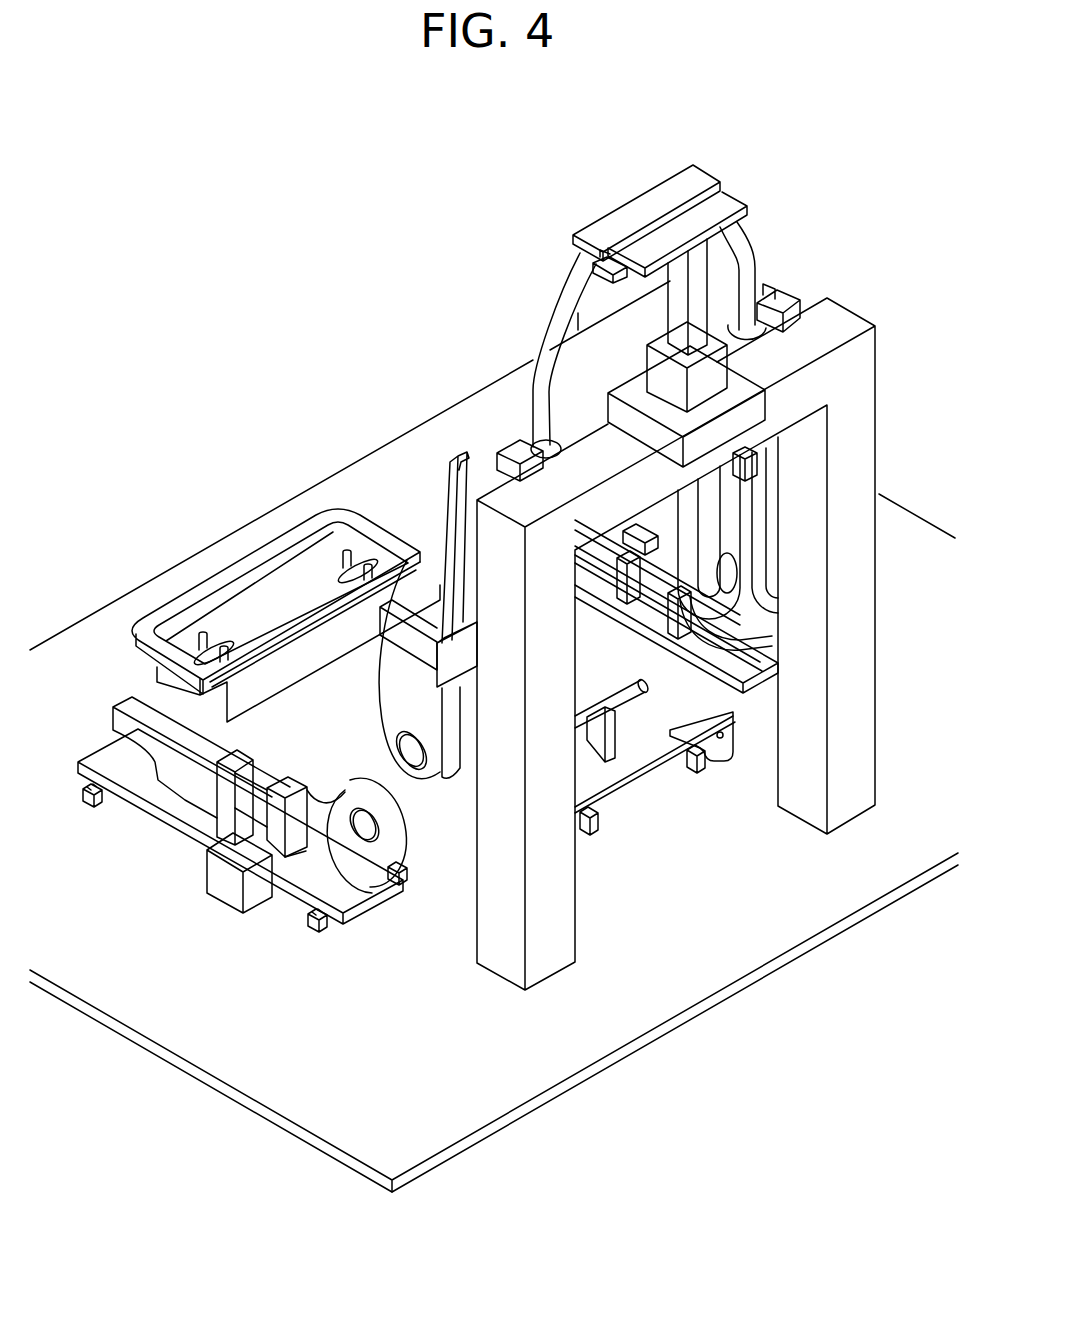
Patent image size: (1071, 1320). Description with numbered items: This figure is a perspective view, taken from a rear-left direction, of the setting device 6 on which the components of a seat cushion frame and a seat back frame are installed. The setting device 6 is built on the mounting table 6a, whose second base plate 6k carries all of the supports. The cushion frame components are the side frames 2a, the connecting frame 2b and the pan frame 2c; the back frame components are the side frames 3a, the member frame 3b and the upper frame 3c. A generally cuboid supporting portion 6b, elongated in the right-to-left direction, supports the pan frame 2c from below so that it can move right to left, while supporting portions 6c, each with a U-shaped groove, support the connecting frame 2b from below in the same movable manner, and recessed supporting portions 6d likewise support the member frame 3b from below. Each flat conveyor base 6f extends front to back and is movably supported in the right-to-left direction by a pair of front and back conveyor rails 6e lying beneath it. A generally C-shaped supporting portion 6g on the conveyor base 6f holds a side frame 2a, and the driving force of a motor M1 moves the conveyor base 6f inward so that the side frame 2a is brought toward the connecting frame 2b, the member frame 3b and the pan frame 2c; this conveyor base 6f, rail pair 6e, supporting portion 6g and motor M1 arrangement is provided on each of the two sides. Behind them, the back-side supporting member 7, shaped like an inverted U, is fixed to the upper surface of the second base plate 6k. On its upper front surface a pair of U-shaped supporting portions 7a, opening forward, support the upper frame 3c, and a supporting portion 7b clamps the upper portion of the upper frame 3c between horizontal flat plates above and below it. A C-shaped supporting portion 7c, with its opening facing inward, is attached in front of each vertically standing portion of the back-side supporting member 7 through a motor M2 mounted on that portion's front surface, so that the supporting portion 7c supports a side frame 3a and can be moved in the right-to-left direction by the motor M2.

The setting device 6 is at (134, 129).
The mounting table 6a is at (494, 736).
The second base plate 6k is at (470, 1090).
The supporting portion 6b is at (286, 620).
The supporting portion 6c is at (614, 742).
The supporting portion 6d is at (706, 766).
The conveyor rail 6e is at (112, 800).
The conveyor base 6f is at (381, 902).
The supporting portion 6g is at (223, 797).
The back-side supporting member 7 is at (866, 657).
The supporting portion 7a is at (553, 442).
The supporting portion 7b is at (727, 207).
The supporting portion 7c is at (455, 690).
The side frame 2a is at (386, 852).
The connecting frame 2b is at (628, 698).
The pan frame 2c is at (225, 580).
The side frame 3a is at (440, 522).
The member frame 3b is at (636, 780).
The upper frame 3c is at (563, 315).
The motor M1 is at (230, 890).
The motor M2 is at (450, 674).